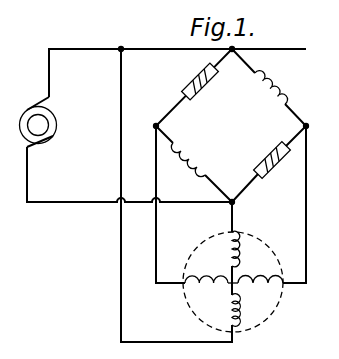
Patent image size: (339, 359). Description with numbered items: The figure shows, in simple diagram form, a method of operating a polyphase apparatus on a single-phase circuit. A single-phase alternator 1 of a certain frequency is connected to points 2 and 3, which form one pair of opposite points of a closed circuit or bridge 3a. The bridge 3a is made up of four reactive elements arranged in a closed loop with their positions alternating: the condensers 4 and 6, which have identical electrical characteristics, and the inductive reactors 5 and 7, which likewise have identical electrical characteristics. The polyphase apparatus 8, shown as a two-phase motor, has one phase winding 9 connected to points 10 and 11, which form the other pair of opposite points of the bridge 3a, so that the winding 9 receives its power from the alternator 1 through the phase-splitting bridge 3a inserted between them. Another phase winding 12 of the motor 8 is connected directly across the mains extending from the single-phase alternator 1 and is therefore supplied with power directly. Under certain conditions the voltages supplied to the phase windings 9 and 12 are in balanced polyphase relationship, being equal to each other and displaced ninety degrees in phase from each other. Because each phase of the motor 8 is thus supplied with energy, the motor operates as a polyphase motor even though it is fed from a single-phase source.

The single-phase alternator 1 is at (57, 125).
The point 2 is at (236, 49).
The point 3 is at (235, 202).
The closed circuit or bridge 3a is at (234, 126).
The condenser 4 is at (191, 81).
The inductive reactor 5 is at (273, 86).
The condenser 6 is at (262, 161).
The inductive reactor 7 is at (200, 165).
The polyphase apparatus 8 is at (235, 282).
The phase winding 9 is at (264, 278).
The point 10 is at (153, 126).
The point 11 is at (309, 126).
The phase winding 12 is at (228, 263).